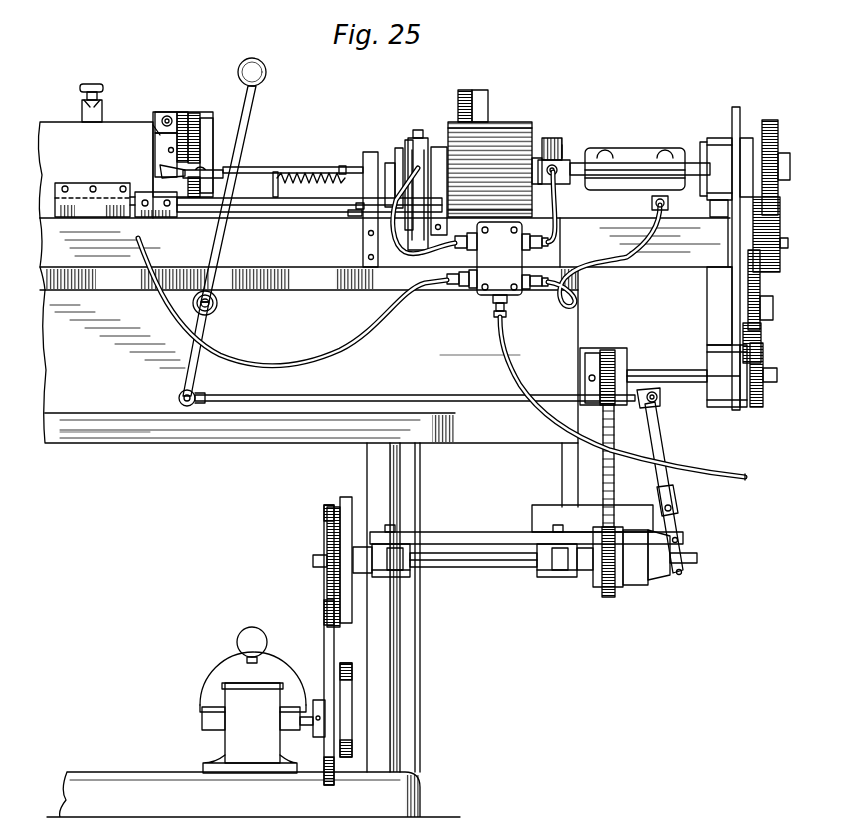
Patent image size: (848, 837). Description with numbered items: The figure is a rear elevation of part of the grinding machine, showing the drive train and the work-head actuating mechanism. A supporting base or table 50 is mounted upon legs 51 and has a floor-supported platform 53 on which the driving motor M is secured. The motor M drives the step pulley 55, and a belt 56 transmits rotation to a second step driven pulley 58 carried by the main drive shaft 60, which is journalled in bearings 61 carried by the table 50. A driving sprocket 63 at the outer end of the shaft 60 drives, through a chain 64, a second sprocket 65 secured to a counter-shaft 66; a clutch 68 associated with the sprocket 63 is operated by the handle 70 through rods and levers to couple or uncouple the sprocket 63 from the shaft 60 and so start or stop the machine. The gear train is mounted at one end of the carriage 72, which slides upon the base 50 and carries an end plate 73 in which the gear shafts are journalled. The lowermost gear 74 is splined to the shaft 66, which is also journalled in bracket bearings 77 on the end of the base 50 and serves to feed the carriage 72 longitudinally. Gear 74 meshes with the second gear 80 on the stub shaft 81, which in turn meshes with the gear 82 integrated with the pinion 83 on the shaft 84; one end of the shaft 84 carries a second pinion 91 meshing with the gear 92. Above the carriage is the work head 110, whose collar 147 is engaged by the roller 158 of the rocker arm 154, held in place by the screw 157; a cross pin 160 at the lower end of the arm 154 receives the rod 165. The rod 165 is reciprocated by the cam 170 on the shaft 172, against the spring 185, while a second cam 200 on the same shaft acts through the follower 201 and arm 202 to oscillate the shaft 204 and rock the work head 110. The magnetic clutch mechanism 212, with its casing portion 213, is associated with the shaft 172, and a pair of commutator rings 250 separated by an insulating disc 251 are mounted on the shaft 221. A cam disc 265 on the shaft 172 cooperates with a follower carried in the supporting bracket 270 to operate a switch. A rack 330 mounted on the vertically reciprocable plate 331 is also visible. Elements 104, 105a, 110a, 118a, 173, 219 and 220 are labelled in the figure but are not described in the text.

The supporting base or table 50 is at (310, 355).
The legs 51 is at (392, 712).
The floor supported platform 53 is at (98, 782).
The step pulley 55 is at (348, 670).
The belt 56 is at (325, 638).
The second step driven pulley 58 is at (340, 503).
The main drive shaft 60 is at (468, 565).
The bearings 61 is at (407, 575).
The driving sprocket 63 is at (620, 590).
The chain 64 is at (613, 434).
The second sprocket 65 is at (610, 348).
The counter-shaft 66 is at (657, 372).
The clutch 68 is at (662, 592).
The handle 70 is at (247, 113).
The carriage 72 is at (58, 257).
The end plate 73 is at (733, 410).
The lowermost gear 74 is at (763, 398).
The bracket bearings 77 is at (585, 347).
The second gear 80 is at (760, 338).
The stub shaft 81 is at (773, 310).
The gear 82 is at (760, 282).
The pinion 83 is at (780, 260).
The shaft 84 is at (782, 240).
The second pinion 91 is at (203, 173).
The gear 92 is at (195, 113).
The knob stem 104 is at (80, 113).
The knob 105a is at (89, 84).
The work head 110 is at (118, 122).
The carriage part 110a is at (160, 117).
The slide block 118a is at (67, 202).
The collar 147 is at (182, 112).
The rocker arm 154 is at (157, 160).
The screw 157 is at (155, 125).
The roller 158 is at (157, 147).
The cross pin 160 is at (160, 172).
The rod 165 is at (257, 170).
The cam 170 is at (407, 143).
The shaft 172 is at (385, 163).
The gear 173 is at (773, 120).
The spring 185 is at (295, 177).
The second cam 200 is at (402, 140).
The follower 201 is at (380, 213).
The arm 202 is at (378, 203).
The shaft 204 is at (255, 203).
The magnetic clutch mechanism 212 is at (506, 117).
The casing portion 213 is at (447, 147).
The coupling 219 is at (512, 125).
The connector 220 is at (548, 138).
The shaft 221 is at (693, 160).
The slip or commutator rings 250 is at (567, 142).
The insulating disc 251 is at (560, 140).
The cam disc 265 is at (417, 130).
The supporting bracket 270 is at (420, 250).
The rack 330 is at (468, 92).
The vertically reciprocable plate 331 is at (487, 93).
The driving motor M is at (210, 680).